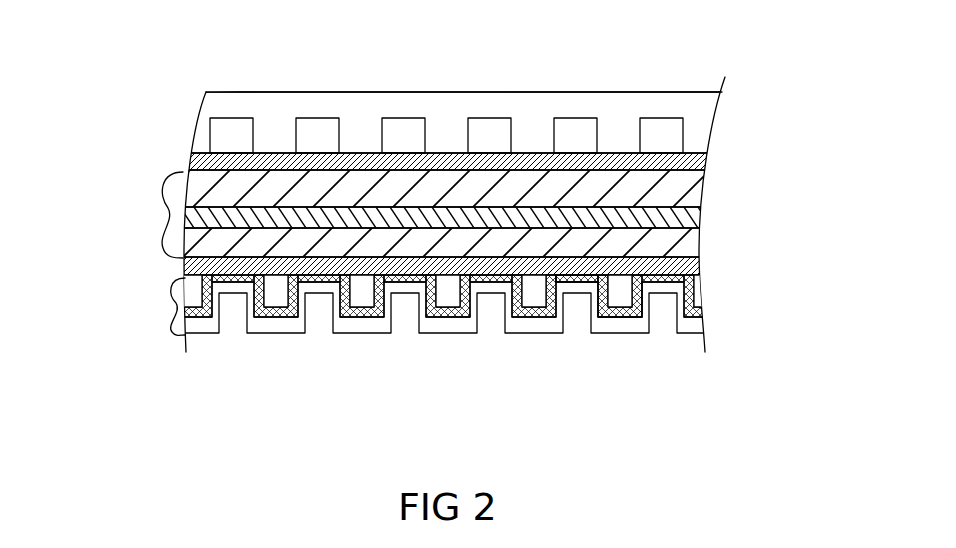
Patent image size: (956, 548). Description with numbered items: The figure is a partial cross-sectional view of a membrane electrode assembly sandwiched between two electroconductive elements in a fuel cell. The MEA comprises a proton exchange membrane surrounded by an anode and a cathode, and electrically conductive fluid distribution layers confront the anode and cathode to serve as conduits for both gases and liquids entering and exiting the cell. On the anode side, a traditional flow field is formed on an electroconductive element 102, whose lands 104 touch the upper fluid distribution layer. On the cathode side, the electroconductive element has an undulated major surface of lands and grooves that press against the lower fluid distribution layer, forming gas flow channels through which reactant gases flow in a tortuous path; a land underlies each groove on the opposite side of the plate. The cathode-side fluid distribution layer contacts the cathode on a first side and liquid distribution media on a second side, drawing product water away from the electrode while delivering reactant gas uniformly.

The electroconductive element 102 is at (445, 128).
The lands 104 is at (357, 153).